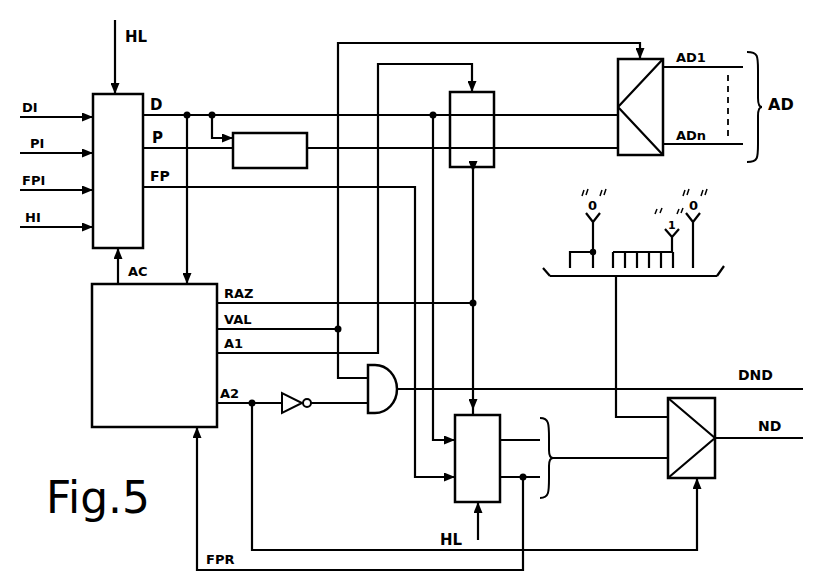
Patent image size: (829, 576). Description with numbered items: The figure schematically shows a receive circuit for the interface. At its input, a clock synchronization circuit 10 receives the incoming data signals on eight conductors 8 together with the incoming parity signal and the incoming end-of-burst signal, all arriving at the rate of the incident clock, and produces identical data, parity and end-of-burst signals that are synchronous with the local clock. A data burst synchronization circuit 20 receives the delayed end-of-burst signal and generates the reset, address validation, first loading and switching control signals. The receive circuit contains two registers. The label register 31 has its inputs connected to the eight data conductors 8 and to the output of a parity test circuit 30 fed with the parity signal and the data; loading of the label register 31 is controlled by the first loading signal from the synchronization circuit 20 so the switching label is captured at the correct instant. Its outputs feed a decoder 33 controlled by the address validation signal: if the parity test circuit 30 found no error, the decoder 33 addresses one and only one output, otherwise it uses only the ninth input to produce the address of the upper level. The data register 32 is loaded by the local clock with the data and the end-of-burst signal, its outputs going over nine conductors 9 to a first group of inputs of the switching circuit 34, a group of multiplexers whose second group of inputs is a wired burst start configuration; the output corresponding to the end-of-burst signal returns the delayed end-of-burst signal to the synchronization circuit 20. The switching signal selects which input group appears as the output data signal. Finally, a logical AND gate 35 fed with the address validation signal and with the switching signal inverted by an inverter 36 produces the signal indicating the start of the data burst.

The conductors 8 is at (319, 262).
The conductors 9 is at (678, 382).
The clock synchronization circuit 10 is at (89, 246).
The data burst synchronization circuit 20 is at (92, 383).
The parity test circuit 30 is at (298, 168).
The label register 31 is at (487, 162).
The data register 32 is at (500, 424).
The decoder 33 is at (646, 155).
The switching circuit 34 is at (716, 470).
The logical AND gate 35 is at (377, 413).
The inverter 36 is at (294, 415).